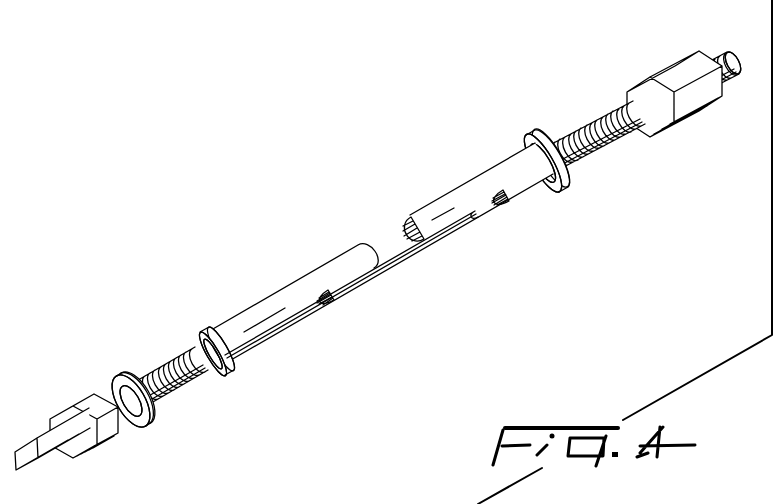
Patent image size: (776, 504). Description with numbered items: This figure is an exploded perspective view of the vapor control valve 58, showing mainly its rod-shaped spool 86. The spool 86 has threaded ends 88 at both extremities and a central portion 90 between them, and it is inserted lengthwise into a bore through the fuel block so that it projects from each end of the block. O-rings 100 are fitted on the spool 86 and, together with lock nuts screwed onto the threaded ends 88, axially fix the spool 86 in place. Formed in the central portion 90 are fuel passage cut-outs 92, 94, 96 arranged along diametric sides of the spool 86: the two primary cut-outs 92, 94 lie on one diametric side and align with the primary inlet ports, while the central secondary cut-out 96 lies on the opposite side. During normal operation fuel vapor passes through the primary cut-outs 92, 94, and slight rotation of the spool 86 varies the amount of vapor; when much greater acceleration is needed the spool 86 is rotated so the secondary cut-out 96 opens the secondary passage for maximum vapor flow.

The vapor control valve 58 is at (386, 252).
The spool 86 is at (277, 280).
The threaded ends 88 is at (619, 139).
The central portion 90 is at (408, 266).
The primary cut-out 92 is at (495, 207).
The primary cut-out 94 is at (315, 309).
The secondary cut-out 96 is at (387, 240).
The O-ring 100 is at (153, 422).